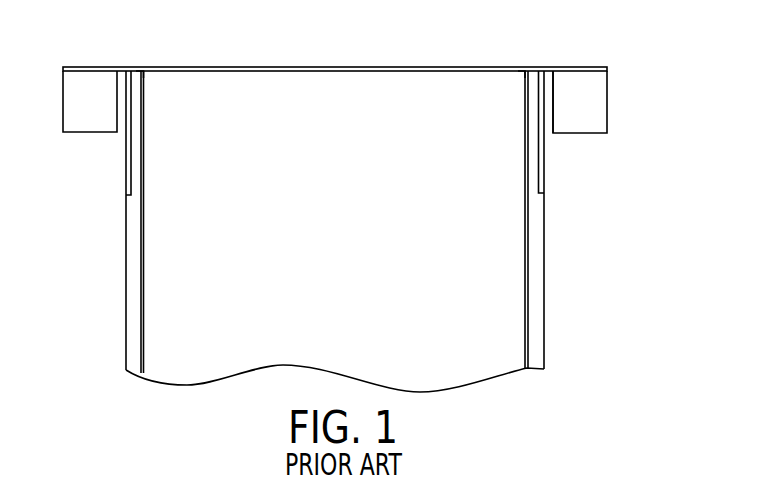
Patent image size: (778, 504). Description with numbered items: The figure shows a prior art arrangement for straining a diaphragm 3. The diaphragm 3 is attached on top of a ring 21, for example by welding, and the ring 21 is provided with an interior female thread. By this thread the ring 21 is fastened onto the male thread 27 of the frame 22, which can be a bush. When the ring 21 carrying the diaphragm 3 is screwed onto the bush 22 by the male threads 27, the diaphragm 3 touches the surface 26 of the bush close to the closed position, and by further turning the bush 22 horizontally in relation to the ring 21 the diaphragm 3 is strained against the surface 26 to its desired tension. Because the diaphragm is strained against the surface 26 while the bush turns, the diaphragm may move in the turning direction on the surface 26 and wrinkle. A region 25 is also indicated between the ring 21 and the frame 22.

The diaphragm 3 is at (332, 67).
The ring 21 is at (583, 100).
The frame 22 is at (540, 330).
The gap 25 is at (553, 103).
The surface 26 is at (141, 72).
The male thread 27 is at (543, 175).